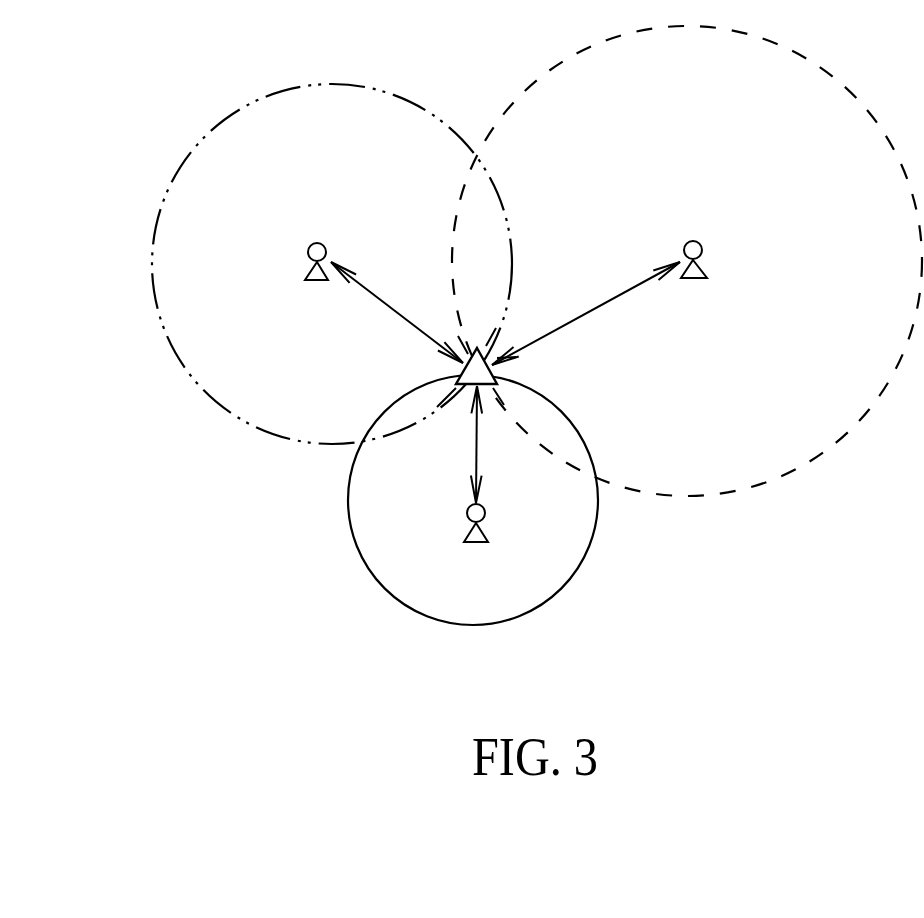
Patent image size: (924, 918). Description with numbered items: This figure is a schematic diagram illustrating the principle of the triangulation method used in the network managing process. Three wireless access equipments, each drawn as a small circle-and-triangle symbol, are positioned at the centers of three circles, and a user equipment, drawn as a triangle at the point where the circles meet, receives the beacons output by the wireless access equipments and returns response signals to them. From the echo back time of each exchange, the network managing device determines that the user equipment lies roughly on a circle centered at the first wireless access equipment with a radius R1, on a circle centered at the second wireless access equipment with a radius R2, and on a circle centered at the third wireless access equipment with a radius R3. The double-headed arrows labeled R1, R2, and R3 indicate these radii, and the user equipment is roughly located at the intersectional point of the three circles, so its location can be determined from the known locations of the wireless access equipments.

The radius R1 is at (397, 312).
The radius R2 is at (586, 313).
The radius R3 is at (461, 444).